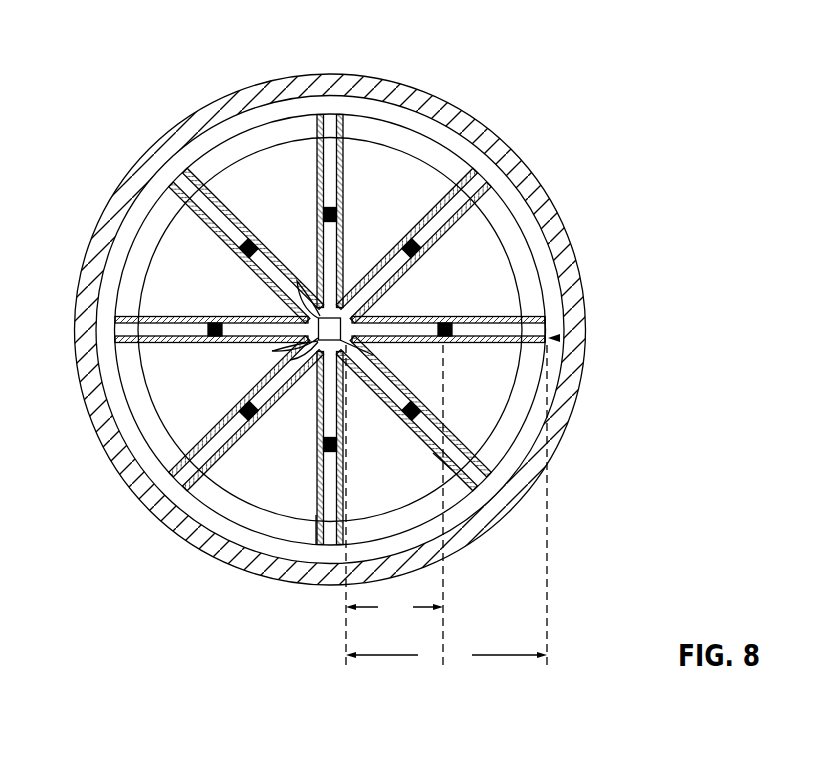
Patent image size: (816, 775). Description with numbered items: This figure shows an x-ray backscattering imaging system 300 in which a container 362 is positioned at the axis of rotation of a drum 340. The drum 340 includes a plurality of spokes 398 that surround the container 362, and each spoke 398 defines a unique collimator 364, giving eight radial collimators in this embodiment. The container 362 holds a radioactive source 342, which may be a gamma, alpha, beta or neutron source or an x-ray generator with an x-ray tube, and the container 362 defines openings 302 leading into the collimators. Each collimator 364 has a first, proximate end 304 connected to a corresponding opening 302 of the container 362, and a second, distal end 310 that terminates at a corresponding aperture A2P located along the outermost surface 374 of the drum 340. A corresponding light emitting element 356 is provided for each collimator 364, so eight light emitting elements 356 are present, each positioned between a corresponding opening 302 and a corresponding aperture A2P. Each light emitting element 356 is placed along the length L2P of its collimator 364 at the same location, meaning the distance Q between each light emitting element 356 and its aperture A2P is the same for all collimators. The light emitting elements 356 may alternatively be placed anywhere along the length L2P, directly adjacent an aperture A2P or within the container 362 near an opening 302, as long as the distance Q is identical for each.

The x-ray backscattering imaging system 300 is at (118, 46).
The drum 340 is at (367, 132).
The outermost surface 374 is at (548, 236).
The collimator 364 is at (228, 207).
The light emitting element 356 is at (253, 247).
The container 362 is at (372, 316).
The opening 302 is at (318, 318).
The first, proximate end 304 is at (305, 380).
The radioactive source 342 is at (373, 355).
The spoke 398 is at (268, 590).
The second, distal end 310 is at (560, 340).
The aperture A2P is at (553, 334).
The distance Q is at (394, 505).
The length L2P is at (446, 509).